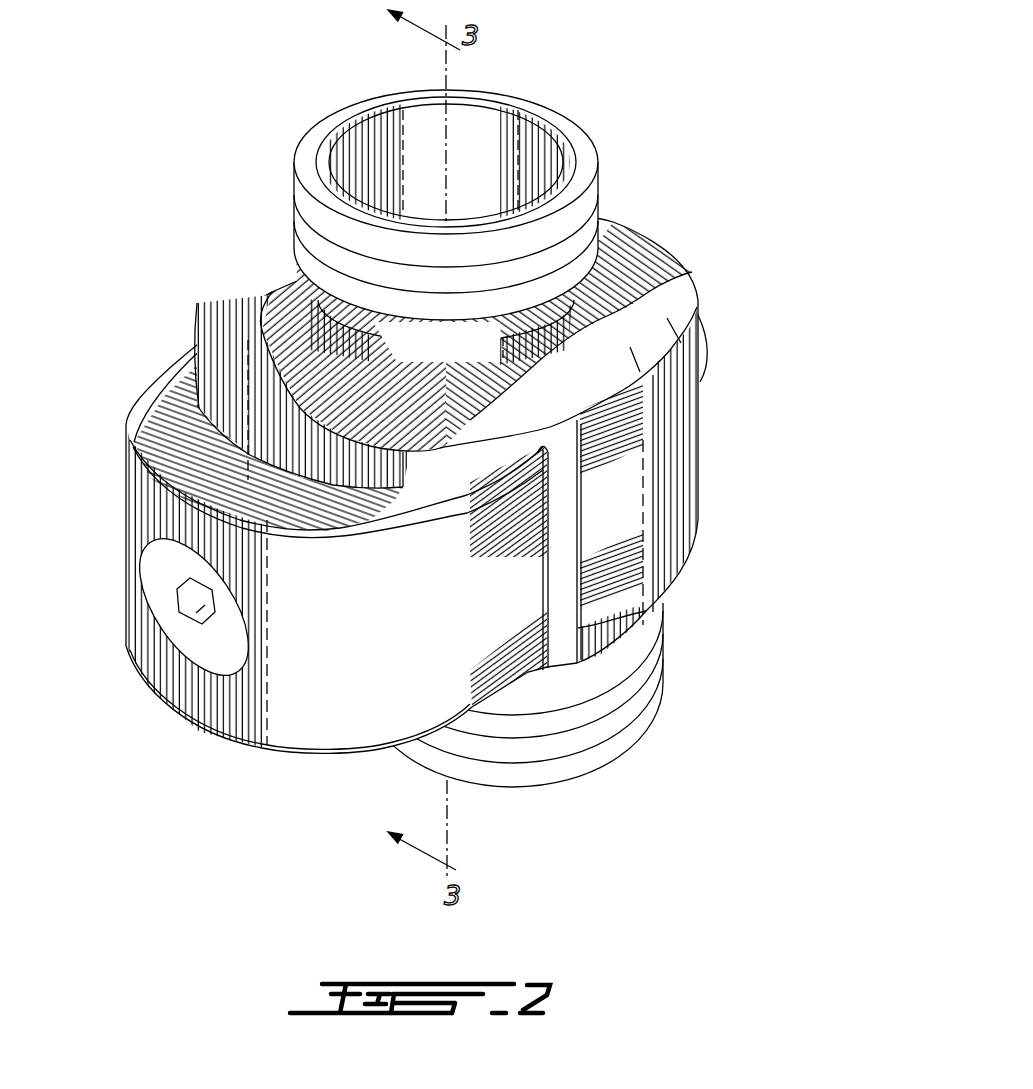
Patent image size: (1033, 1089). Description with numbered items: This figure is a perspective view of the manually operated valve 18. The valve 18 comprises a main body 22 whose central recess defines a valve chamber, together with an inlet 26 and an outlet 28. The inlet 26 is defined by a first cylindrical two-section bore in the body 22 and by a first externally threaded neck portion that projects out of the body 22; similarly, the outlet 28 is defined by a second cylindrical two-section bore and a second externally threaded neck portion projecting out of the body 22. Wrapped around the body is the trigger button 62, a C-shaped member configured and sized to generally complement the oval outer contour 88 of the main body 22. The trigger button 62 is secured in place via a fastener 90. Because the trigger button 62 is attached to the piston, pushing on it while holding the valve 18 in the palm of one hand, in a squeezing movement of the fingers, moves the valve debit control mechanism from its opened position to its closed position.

The valve 18 is at (618, 135).
The main body 22 is at (690, 269).
The inlet 26 is at (590, 718).
The outlet 28 is at (310, 190).
The trigger button 62 is at (316, 688).
The oval outer contour 88 is at (658, 493).
The fastener 90 is at (208, 645).